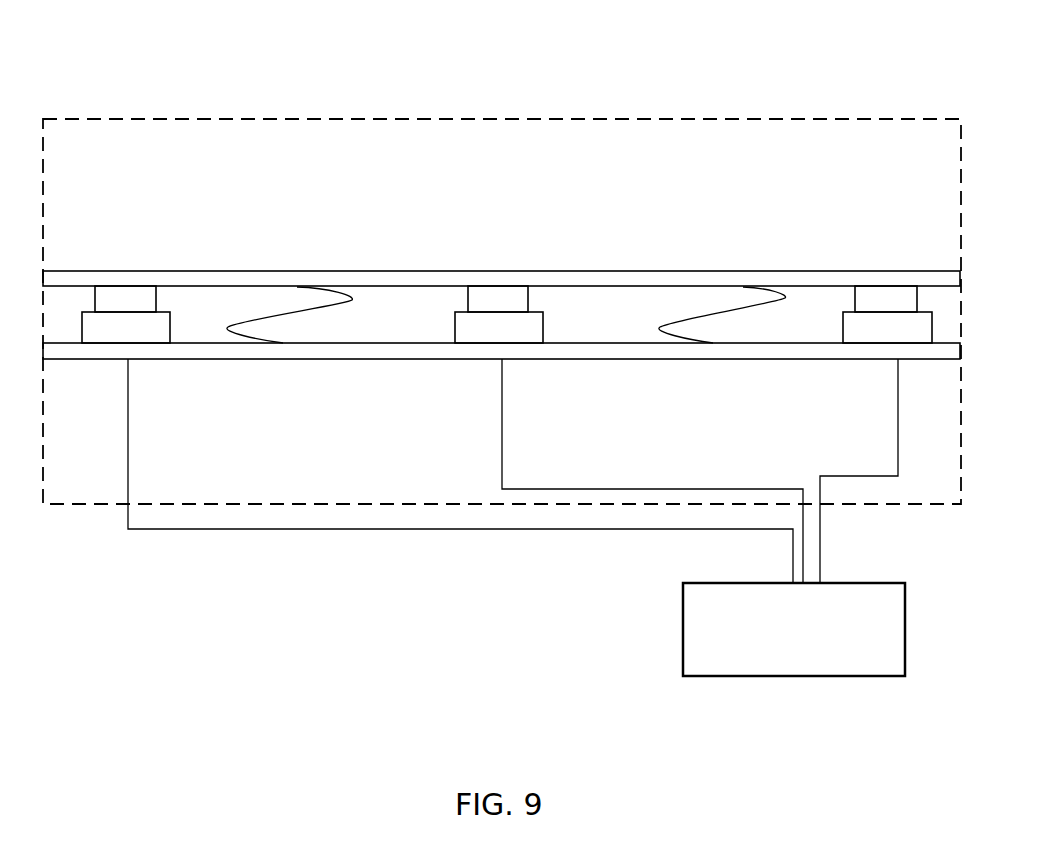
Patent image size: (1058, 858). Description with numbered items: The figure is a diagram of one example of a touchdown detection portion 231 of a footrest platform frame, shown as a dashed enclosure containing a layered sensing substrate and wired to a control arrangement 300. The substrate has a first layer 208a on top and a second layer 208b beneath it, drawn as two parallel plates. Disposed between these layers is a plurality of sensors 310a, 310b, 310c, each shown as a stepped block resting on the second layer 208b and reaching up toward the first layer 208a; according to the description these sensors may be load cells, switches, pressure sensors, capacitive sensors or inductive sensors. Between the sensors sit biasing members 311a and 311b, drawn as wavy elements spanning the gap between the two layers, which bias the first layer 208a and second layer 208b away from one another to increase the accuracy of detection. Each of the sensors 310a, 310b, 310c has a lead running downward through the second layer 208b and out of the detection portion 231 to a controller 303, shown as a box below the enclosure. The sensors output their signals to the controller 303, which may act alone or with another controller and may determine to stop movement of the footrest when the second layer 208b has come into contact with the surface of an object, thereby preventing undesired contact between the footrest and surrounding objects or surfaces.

The touchdown detection portion 231 is at (563, 117).
The first layer 208a is at (393, 270).
The second layer 208b is at (393, 360).
The sensor 310a is at (125, 312).
The sensor 310b is at (497, 312).
The sensor 310c is at (885, 312).
The biasing member 311a is at (295, 312).
The biasing member 311b is at (728, 312).
The controller 303 is at (794, 629).
The sensing system 300 is at (780, 737).